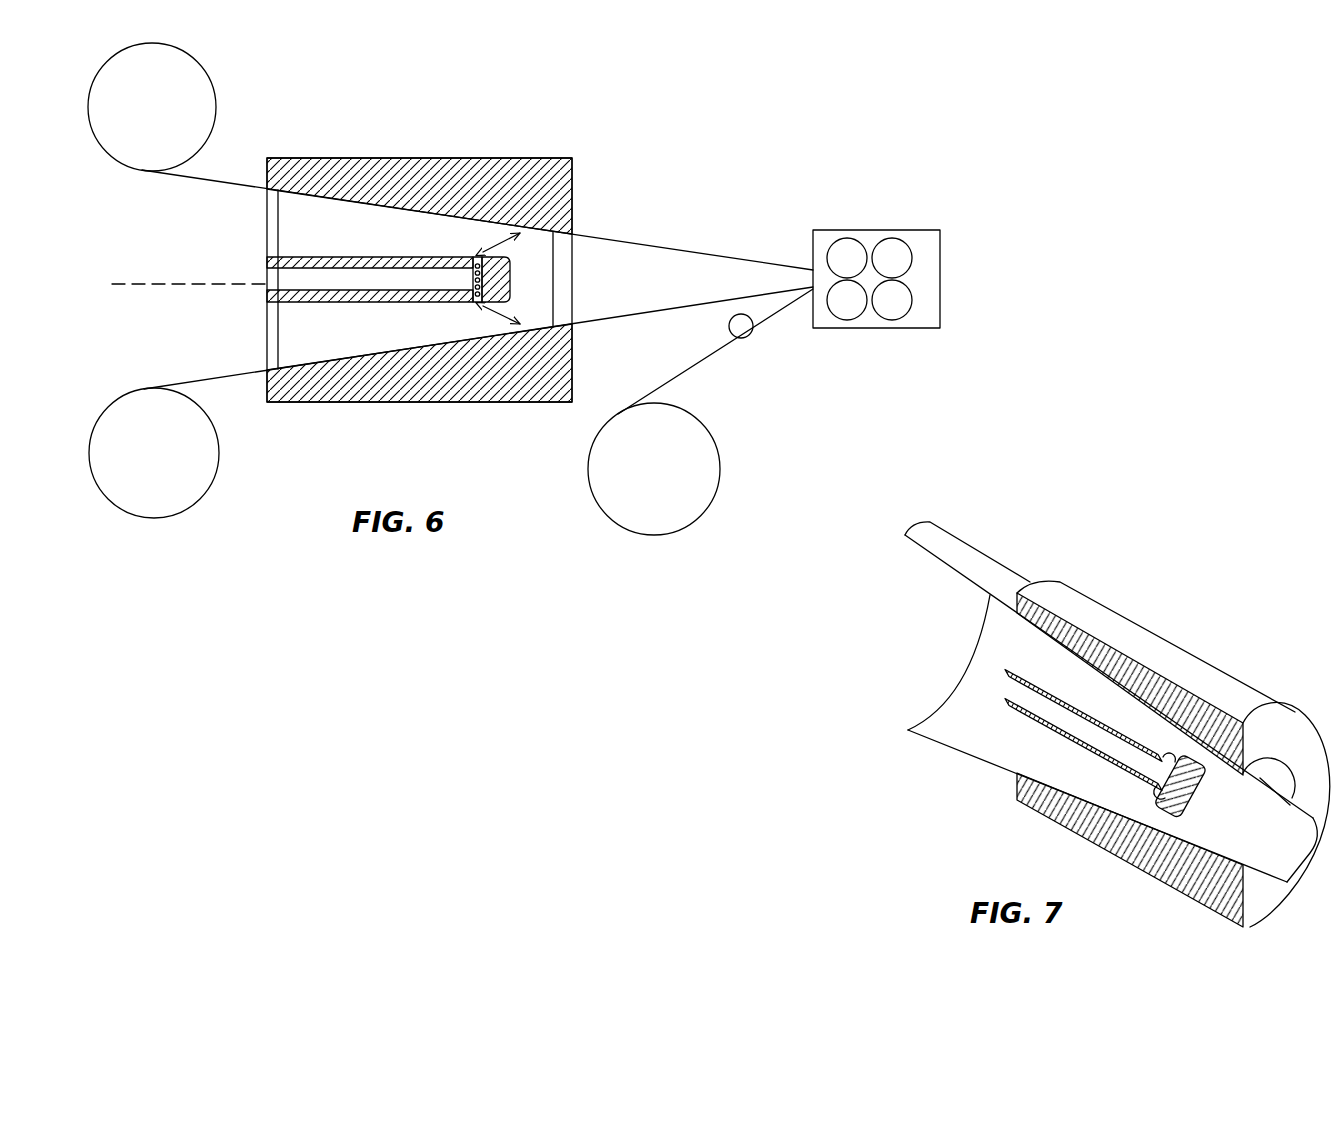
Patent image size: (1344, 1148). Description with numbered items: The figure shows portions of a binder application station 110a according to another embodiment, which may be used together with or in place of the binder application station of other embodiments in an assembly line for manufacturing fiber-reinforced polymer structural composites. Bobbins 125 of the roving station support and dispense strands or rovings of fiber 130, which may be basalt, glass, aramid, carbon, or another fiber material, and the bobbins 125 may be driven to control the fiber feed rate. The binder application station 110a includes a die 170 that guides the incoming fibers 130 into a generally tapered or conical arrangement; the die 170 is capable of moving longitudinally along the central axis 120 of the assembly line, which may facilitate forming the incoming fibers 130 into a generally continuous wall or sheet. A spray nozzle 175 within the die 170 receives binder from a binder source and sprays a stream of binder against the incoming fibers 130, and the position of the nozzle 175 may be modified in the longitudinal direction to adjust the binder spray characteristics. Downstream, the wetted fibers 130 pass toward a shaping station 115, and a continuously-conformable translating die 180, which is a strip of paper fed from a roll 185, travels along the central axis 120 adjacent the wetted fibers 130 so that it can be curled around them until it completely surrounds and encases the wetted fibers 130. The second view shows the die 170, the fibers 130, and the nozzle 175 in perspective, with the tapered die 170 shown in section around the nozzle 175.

In FIG. 6, the binder application station 110a is at (675, 105).
In FIG. 6, the shaping station 115 is at (898, 212).
In FIG. 6, the central axis 120 is at (173, 284).
In FIG. 6, the bobbins 125 is at (212, 90).
In FIG. 6, the fibers 130 is at (600, 237).
In FIG. 7, the fibers 130 is at (960, 703).
In FIG. 6, the die 170 is at (453, 158).
In FIG. 7, the die 170 is at (1143, 635).
In FIG. 6, the spray nozzle 175 is at (453, 305).
In FIG. 7, the spray nozzle 175 is at (1200, 790).
In FIG. 6, the translating die 180 is at (698, 350).
In FIG. 6, the roll 185 is at (673, 533).